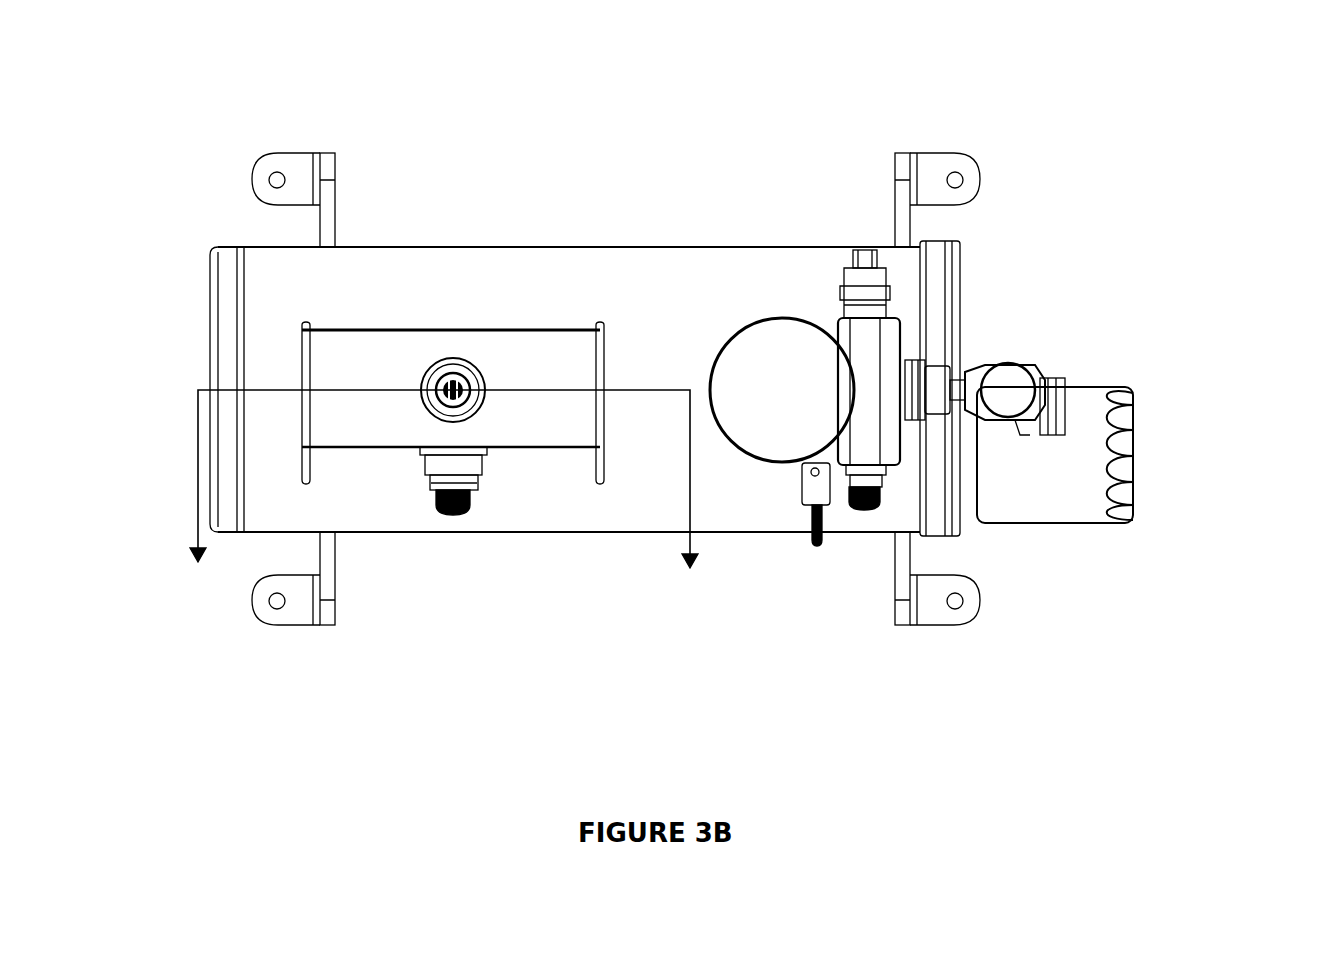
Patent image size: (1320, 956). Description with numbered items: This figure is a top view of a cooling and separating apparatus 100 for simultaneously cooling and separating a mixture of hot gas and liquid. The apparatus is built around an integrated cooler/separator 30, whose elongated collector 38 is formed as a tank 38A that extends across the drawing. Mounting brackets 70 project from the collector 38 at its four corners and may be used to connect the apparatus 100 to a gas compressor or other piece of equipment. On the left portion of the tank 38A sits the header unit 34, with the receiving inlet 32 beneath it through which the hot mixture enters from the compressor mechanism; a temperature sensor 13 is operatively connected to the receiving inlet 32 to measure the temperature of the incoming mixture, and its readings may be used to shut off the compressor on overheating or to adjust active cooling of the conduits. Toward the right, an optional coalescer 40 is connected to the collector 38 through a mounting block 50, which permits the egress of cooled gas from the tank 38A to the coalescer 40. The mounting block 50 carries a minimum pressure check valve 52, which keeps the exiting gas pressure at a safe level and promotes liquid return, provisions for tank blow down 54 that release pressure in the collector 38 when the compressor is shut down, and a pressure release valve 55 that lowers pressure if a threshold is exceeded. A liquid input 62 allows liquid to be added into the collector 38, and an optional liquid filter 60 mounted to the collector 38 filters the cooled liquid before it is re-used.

The cooling and separating apparatus 100 is at (1198, 216).
The integrated cooler/separator 30 is at (246, 216).
The collector 38 is at (585, 321).
The tank 38A is at (647, 300).
The mounting brackets 70 is at (290, 158).
The header unit 34 is at (328, 362).
The temperature sensor 13 is at (462, 358).
The receiving inlet 32 is at (467, 505).
The coalescer 40 is at (770, 312).
The mounting block 50 is at (877, 368).
The minimum pressure check valve 52 is at (940, 403).
The provisions for tank blow down 54 is at (868, 508).
The pressure release valve 55 is at (808, 542).
The liquid filter 60 is at (1072, 450).
The liquid input 62 is at (1003, 363).